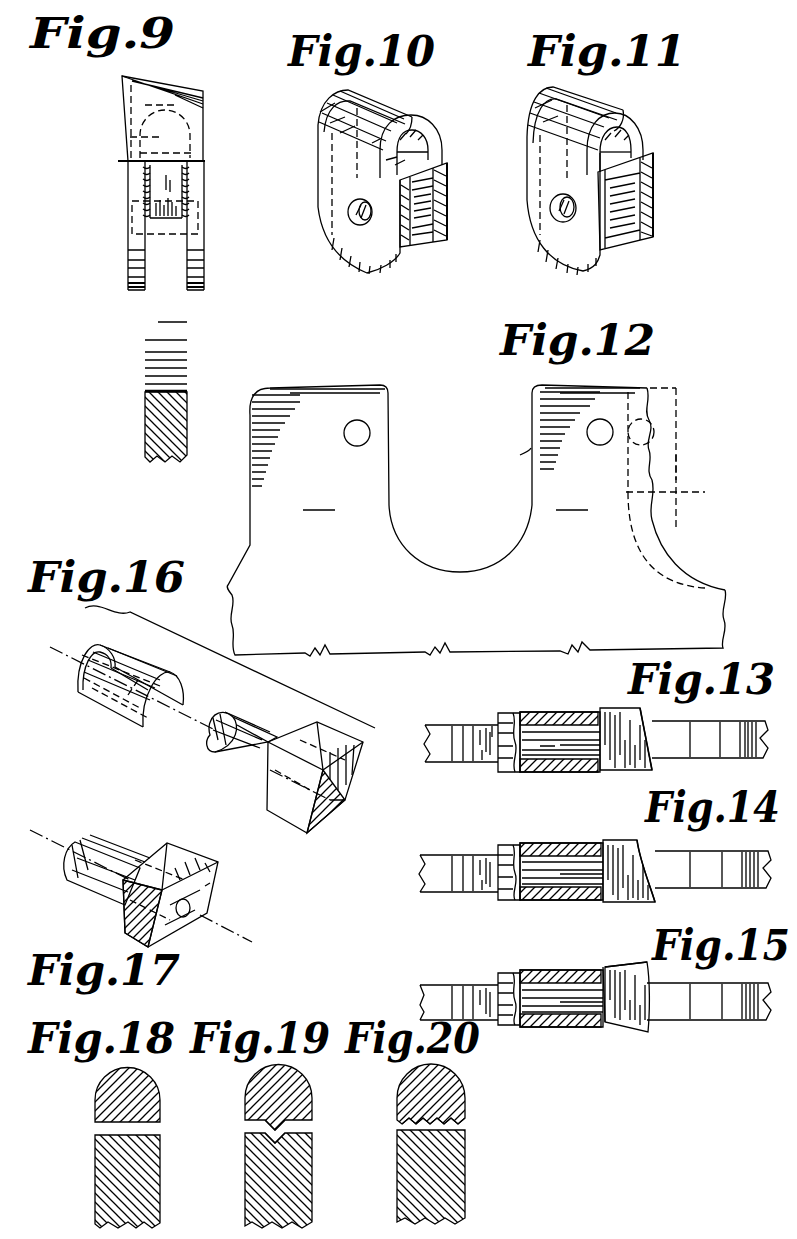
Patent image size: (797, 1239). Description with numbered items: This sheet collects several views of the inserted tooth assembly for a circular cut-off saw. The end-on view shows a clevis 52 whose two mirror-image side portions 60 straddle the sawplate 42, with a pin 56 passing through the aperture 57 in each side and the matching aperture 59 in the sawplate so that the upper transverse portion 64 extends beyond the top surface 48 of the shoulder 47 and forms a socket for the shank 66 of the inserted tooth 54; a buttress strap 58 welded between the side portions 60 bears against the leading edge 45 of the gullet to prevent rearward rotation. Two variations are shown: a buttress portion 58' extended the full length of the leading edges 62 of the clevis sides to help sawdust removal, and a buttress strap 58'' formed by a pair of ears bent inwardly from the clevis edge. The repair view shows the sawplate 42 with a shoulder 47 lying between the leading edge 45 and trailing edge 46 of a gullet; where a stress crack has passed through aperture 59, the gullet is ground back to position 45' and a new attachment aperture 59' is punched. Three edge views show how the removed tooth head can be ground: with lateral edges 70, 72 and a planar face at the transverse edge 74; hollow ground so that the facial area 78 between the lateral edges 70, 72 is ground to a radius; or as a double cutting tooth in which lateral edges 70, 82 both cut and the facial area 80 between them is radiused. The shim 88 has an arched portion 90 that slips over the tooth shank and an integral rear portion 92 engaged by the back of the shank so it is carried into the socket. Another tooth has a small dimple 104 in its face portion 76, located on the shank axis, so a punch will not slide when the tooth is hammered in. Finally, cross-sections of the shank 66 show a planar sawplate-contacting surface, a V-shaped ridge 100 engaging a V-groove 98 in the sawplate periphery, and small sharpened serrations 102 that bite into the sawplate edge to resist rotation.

In FIG. 9, the sawplate 42 is at (144, 420).
In FIG. 12, the sawplate 42 is at (470, 623).
In FIG. 9, the leading edge 45 is at (131, 356).
In FIG. 12, the leading edge 45 is at (708, 465).
In FIG. 18, the leading edge 45 is at (96, 1181).
In FIG. 19, the leading edge 45 is at (253, 1180).
In FIG. 20, the leading edge 45 is at (463, 1177).
In FIG. 12, the leading edge (ground-back position) 45' is at (685, 492).
In FIG. 12, the trailing edge 46 is at (524, 453).
In FIG. 12, the shoulder 47 is at (445, 497).
In FIG. 13, the top surface 48 is at (482, 727).
In FIG. 14, the top surface 48 is at (484, 860).
In FIG. 15, the top surface 48 is at (485, 985).
In FIG. 10, the clevis 52 is at (304, 152).
In FIG. 11, the clevis 52 is at (655, 131).
In FIG. 9, the inserted tooth / head portion 54 is at (120, 84).
In FIG. 16, the inserted tooth / head portion 54 is at (303, 738).
In FIG. 17, the inserted tooth / head portion 54 is at (177, 860).
In FIG. 9, the pin 56 is at (130, 219).
In FIG. 10, the aperture (clevis side) 57 is at (352, 222).
In FIG. 11, the aperture (clevis side) 57 is at (560, 222).
In FIG. 9, the buttress strap 58 is at (122, 225).
In FIG. 10, the buttress portion (full-length) 58' is at (443, 205).
In FIG. 11, the buttress strap (bent ears) 58'' is at (664, 201).
In FIG. 12, the aperture (sawplate) 59 is at (512, 432).
In FIG. 12, the new attachment aperture 59' is at (580, 447).
In FIG. 9, the side portion 60 is at (128, 253).
In FIG. 10, the side portion 60 is at (324, 200).
In FIG. 11, the side portion 60 is at (542, 202).
In FIG. 10, the leading edge (clevis side) 62 is at (447, 225).
In FIG. 11, the leading edge (clevis side) 62 is at (654, 210).
In FIG. 9, the upper transverse portion 64 is at (122, 104).
In FIG. 10, the upper transverse portion 64 is at (398, 108).
In FIG. 11, the upper transverse portion 64 is at (603, 108).
In FIG. 13, the upper transverse portion 64 is at (548, 718).
In FIG. 14, the upper transverse portion 64 is at (540, 845).
In FIG. 15, the upper transverse portion 64 is at (540, 974).
In FIG. 9, the shank 66 is at (128, 147).
In FIG. 16, the shank 66 is at (240, 765).
In FIG. 17, the shank 66 is at (112, 848).
In FIG. 13, the shank 66 is at (578, 735).
In FIG. 14, the shank 66 is at (580, 865).
In FIG. 15, the shank 66 is at (580, 995).
In FIG. 18, the shank 66 is at (94, 1095).
In FIG. 19, the shank 66 is at (246, 1095).
In FIG. 20, the shank 66 is at (463, 1092).
In FIG. 13, the lateral edge 70 is at (640, 760).
In FIG. 14, the lateral edge 70 is at (650, 900).
In FIG. 15, the lateral edge 70 is at (650, 1032).
In FIG. 13, the lateral edge 72 is at (645, 707).
In FIG. 14, the lateral edge 72 is at (643, 837).
In FIG. 13, the transverse edge 74 is at (720, 735).
In FIG. 17, the face portion 76 is at (205, 886).
In FIG. 14, the facial area (hollow ground) 78 is at (645, 868).
In FIG. 15, the facial area (double cutting) 80 is at (640, 1000).
In FIG. 15, the lateral edge (double cutting) 82 is at (645, 967).
In FIG. 16, the shim 88 is at (88, 730).
In FIG. 16, the arched portion 90 is at (125, 710).
In FIG. 16, the rear portion 92 is at (80, 682).
In FIG. 19, the V-groove 98 is at (262, 1143).
In FIG. 19, the V-shaped ridge 100 is at (268, 1126).
In FIG. 20, the serrations 102 is at (465, 1123).
In FIG. 17, the dimple 104 is at (190, 907).